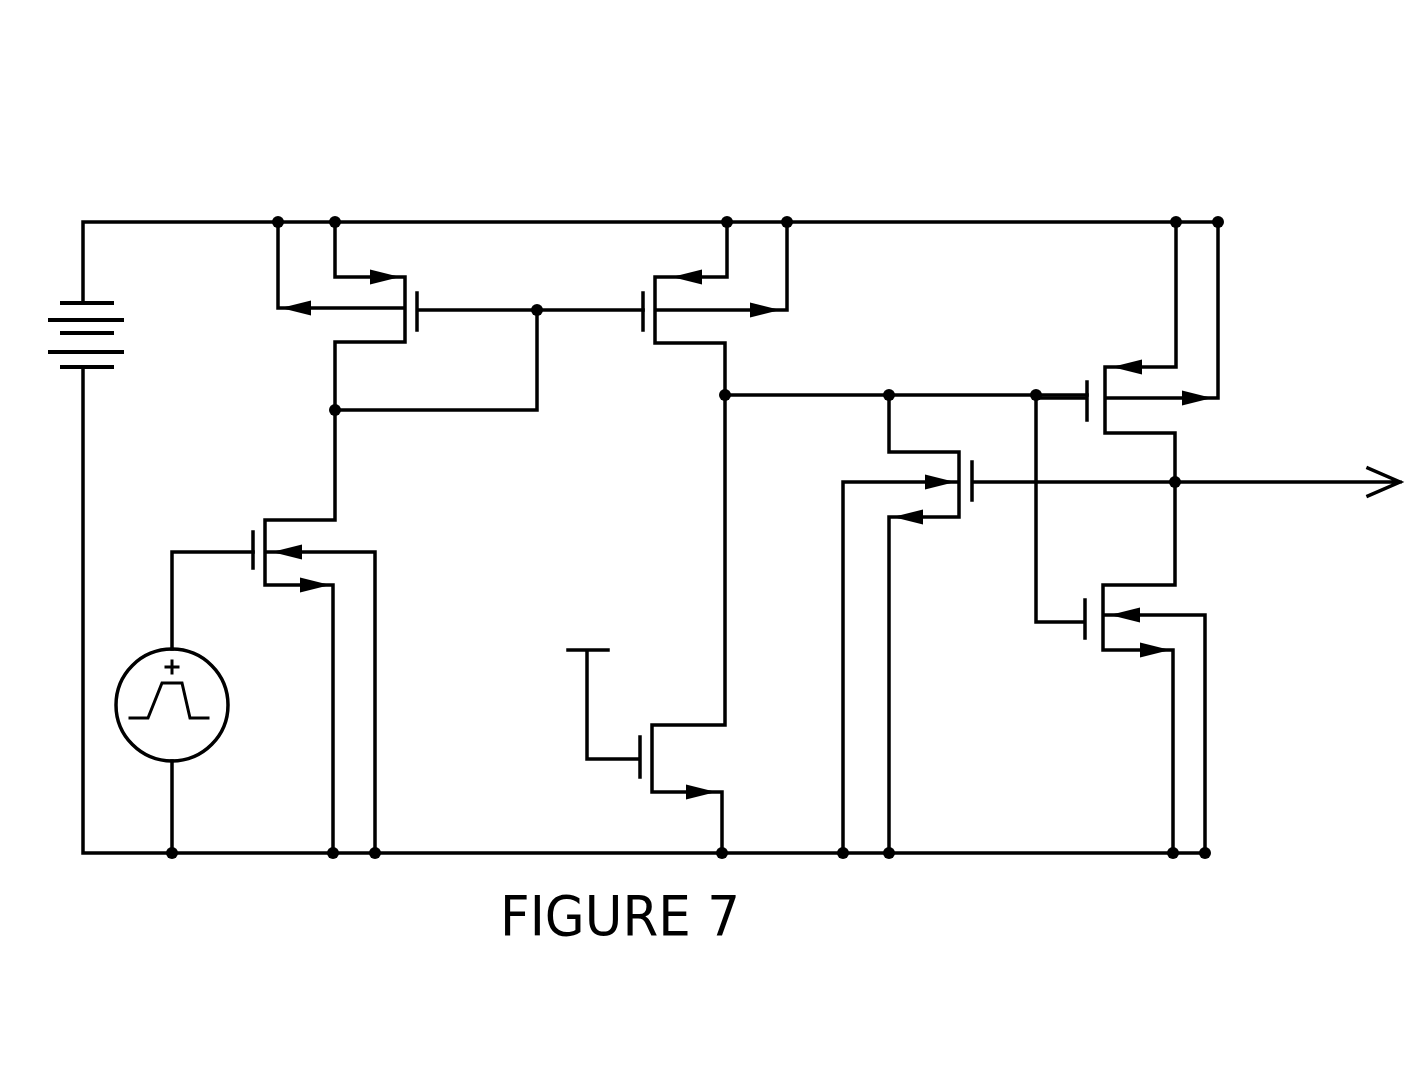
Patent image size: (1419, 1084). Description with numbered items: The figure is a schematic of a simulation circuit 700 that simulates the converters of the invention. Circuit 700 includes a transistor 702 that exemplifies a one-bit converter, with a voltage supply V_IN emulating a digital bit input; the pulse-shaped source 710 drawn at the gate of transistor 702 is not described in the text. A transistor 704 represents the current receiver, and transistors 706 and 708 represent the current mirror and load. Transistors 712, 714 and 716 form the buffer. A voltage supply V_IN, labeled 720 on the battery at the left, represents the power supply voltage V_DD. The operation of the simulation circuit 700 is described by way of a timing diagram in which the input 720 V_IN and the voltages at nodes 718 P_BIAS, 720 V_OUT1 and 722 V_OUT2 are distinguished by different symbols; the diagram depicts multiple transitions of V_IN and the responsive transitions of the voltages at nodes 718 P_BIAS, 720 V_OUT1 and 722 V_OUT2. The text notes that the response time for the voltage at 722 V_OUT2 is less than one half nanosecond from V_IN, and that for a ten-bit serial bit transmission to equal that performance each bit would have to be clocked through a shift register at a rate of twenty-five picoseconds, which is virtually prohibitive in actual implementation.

The simulation circuit 700 is at (720, 216).
The transistor 702 is at (272, 599).
The transistor 704 is at (400, 262).
The transistor 706 is at (660, 360).
The transistor 708 is at (675, 718).
The pulse voltage source 710 is at (138, 655).
The transistor 712 is at (968, 521).
The transistor 714 is at (1098, 667).
The transistor 716 is at (1150, 338).
The P_BIAS node 718 is at (330, 410).
The V_IN / V_OUT1 node 720 is at (836, 328).
The V_OUT2 node 722 is at (1193, 482).